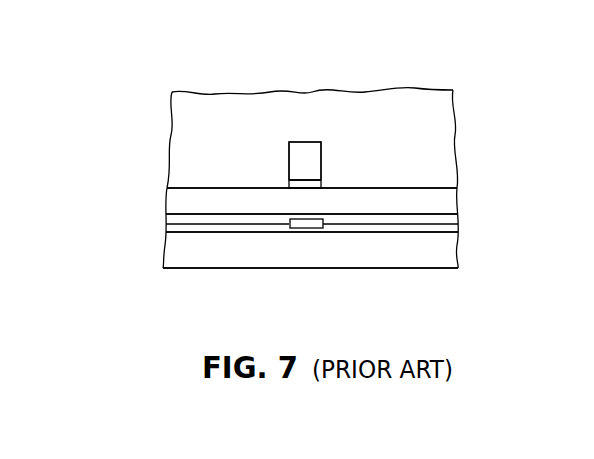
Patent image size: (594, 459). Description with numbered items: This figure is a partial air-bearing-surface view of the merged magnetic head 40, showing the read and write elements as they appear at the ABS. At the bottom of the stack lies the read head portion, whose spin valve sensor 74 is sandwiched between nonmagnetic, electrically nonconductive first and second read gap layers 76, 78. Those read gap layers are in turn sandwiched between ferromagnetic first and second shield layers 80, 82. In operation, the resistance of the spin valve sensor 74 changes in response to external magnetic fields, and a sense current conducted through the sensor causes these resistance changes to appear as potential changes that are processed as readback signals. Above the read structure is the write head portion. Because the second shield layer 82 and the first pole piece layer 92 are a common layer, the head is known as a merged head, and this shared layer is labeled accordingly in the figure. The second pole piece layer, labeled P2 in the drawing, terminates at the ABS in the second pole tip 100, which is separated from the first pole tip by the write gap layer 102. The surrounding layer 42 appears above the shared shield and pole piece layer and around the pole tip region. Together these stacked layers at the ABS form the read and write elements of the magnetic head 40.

The merged magnetic head 40 is at (473, 102).
The upper dielectric layer 42 is at (172, 117).
The second pole tip 100 is at (312, 148).
The write gap layer 102 is at (306, 183).
The second polysilicon layer P2 is at (313, 165).
The second shield layer 82 is at (168, 208).
The first pole piece layer 92 is at (312, 201).
The spin valve sensor 74 is at (307, 229).
The first read gap layer 76 is at (225, 232).
The second read gap layer 78 is at (421, 218).
The first shield layer 80 is at (450, 250).